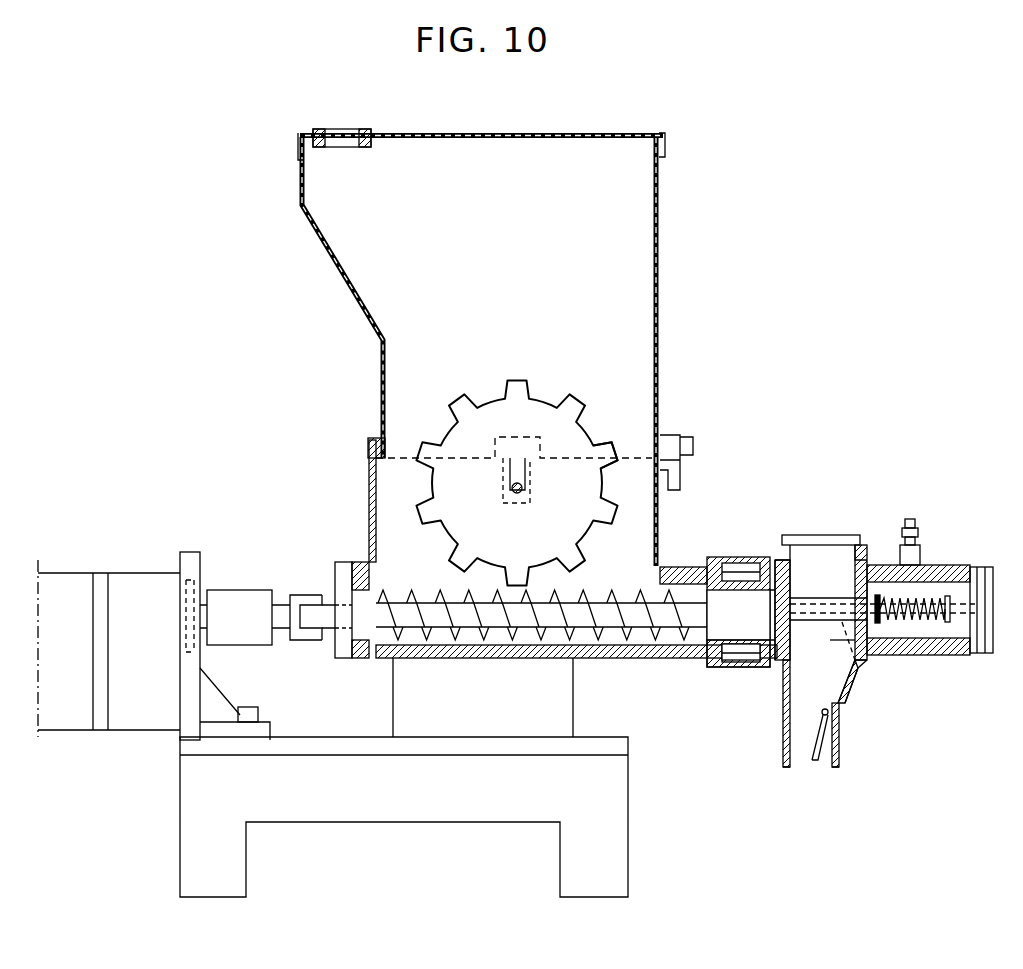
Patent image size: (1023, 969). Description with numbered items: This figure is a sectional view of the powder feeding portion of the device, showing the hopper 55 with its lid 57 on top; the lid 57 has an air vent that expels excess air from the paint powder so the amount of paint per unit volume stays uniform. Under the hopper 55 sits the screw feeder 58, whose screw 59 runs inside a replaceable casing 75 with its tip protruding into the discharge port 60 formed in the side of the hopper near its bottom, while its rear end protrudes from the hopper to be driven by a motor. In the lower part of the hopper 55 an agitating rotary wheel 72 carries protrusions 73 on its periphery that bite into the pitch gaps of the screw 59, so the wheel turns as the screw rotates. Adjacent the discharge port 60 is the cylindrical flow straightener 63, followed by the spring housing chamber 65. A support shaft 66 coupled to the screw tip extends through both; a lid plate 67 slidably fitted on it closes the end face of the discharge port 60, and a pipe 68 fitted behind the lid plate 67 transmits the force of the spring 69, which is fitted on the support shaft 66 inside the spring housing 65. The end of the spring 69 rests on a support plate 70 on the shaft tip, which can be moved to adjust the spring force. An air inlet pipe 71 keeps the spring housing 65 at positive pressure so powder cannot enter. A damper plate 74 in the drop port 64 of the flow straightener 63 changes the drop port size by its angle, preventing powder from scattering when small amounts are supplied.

The hopper 55 is at (660, 212).
The lid 57 is at (604, 132).
The screw feeder 58 is at (409, 579).
The screw 59 is at (612, 592).
The discharge port 60 is at (669, 636).
The cylindrical flow straightener 63 is at (799, 580).
The drop port 64 is at (803, 768).
The spring housing chamber 65 is at (945, 567).
The support shaft 66 is at (856, 688).
The lid plate 67 is at (757, 668).
The pipe 68 is at (848, 680).
The spring 69 is at (900, 625).
The support plate 70 is at (930, 628).
The air inlet pipe 71 is at (916, 528).
The agitating rotary wheel 72 is at (598, 438).
The protrusions 73 is at (596, 398).
The damper plate 74 is at (825, 768).
The casing 75 is at (722, 565).